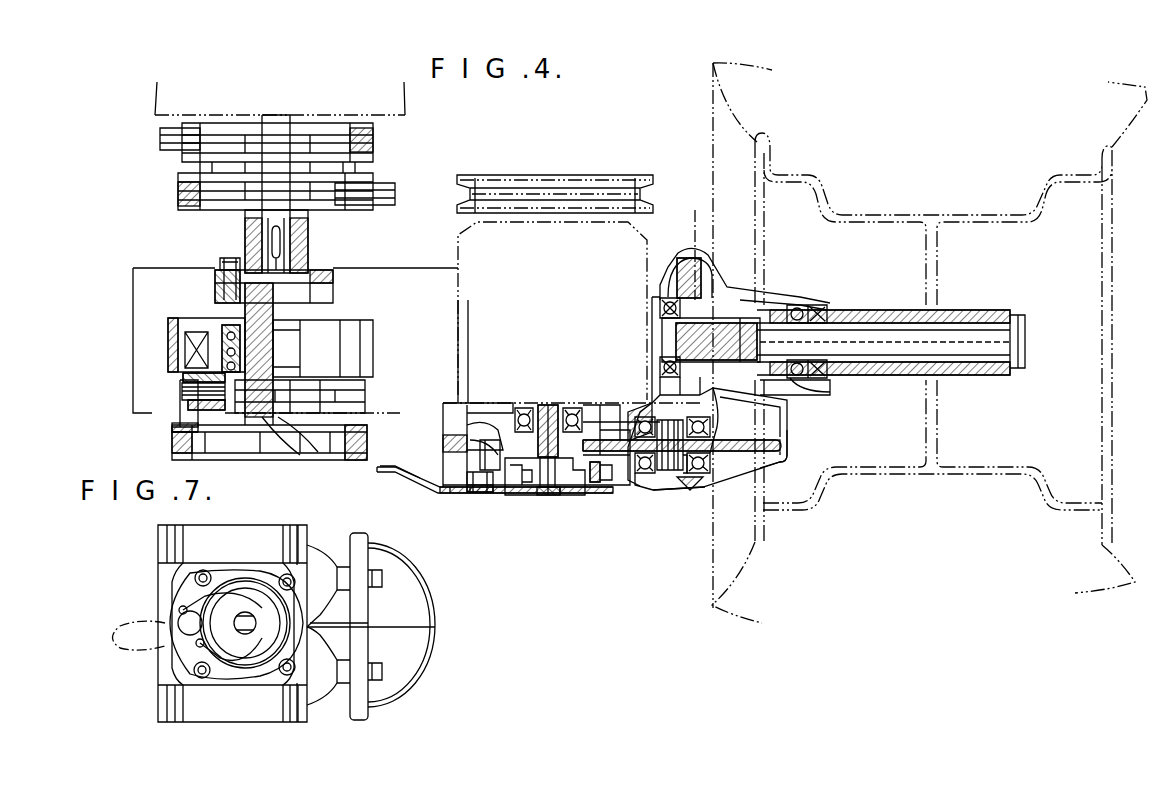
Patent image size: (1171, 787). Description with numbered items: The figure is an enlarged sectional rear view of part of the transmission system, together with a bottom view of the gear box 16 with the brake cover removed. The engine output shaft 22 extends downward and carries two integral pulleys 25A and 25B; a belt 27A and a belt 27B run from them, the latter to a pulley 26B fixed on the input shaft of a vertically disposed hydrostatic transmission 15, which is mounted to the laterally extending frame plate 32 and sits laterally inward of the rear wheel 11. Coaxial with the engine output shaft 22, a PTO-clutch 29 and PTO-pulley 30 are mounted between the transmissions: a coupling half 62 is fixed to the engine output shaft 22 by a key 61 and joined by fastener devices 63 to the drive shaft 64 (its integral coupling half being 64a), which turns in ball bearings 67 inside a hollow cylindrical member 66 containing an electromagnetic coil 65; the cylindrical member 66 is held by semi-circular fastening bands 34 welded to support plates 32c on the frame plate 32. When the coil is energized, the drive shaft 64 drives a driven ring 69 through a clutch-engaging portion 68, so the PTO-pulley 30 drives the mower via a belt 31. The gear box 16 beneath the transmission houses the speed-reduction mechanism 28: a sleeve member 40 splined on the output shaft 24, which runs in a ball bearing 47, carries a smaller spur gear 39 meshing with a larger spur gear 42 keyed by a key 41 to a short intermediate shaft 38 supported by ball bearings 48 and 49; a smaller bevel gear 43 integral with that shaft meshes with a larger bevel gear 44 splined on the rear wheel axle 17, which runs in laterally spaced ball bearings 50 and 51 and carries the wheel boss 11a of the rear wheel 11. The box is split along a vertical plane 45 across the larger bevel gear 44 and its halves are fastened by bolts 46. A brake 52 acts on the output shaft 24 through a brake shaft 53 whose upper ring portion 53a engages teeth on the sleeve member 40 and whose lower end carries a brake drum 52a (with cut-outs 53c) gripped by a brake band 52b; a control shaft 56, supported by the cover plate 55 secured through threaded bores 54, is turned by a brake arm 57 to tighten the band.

In FIG. 4, the rear wheel 11 is at (713, 92).
In FIG. 4, the wheel boss 11a is at (972, 378).
In FIG. 4, the hydrostatic transmission 15 is at (470, 326).
In FIG. 7, the gear box 16 is at (318, 700).
In FIG. 4, the rear wheel axle 17 is at (870, 322).
In FIG. 4, the engine output shaft 22 is at (300, 216).
In FIG. 4, the output shaft 24 is at (580, 405).
In FIG. 4, the pulley 25A is at (320, 140).
In FIG. 4, the pulley 25B is at (235, 198).
In FIG. 4, the pulley 26B is at (582, 190).
In FIG. 4, the belt 27A is at (378, 141).
In FIG. 4, the belt 27B is at (180, 192).
In FIG. 4, the speed-reduction mechanism 28 is at (798, 386).
In FIG. 4, the PTO-clutch 29 is at (375, 392).
In FIG. 4, the PTO-pulley 30 is at (254, 448).
In FIG. 4, the belt 31 is at (358, 448).
In FIG. 4, the frame plate 32 is at (420, 266).
In FIG. 4, the support plate 32c is at (375, 346).
In FIG. 4, the fastening band 34 is at (172, 365).
In FIG. 4, the intermediate shaft 38 is at (702, 488).
In FIG. 4, the smaller spur gear 39 is at (490, 412).
In FIG. 4, the sleeve member 40 is at (548, 405).
In FIG. 4, the key 41 is at (712, 485).
In FIG. 4, the larger spur gear 42 is at (792, 440).
In FIG. 4, the smaller bevel gear 43 is at (648, 400).
In FIG. 4, the larger bevel gear 44 is at (670, 266).
In FIG. 4, the vertical plane 45 is at (704, 238).
In FIG. 4, the bolt 46 is at (688, 476).
In FIG. 7, the bolt 46 is at (383, 578).
In FIG. 4, the ball bearing 47 is at (520, 408).
In FIG. 4, the ball bearing 48 is at (722, 420).
In FIG. 4, the ball bearing 49 is at (660, 478).
In FIG. 4, the ball bearing 50 is at (660, 306).
In FIG. 4, the ball bearing 51 is at (822, 302).
In FIG. 4, the brake 52 is at (506, 492).
In FIG. 7, the brake 52 is at (243, 700).
In FIG. 4, the brake drum 52a is at (430, 480).
In FIG. 7, the brake drum 52a is at (298, 580).
In FIG. 4, the brake band 52b is at (600, 485).
In FIG. 7, the brake band 52b is at (183, 605).
In FIG. 4, the brake shaft 53 is at (552, 495).
In FIG. 7, the brake shaft 53 is at (243, 636).
In FIG. 4, the upper ring portion 53a is at (486, 458).
In FIG. 7, the impeller chamber 53c is at (265, 600).
In FIG. 7, the threaded bore 54 is at (285, 575).
In FIG. 4, the cover plate 55 is at (516, 490).
In FIG. 4, the control shaft 56 is at (479, 493).
In FIG. 7, the control shaft 56 is at (178, 615).
In FIG. 4, the brake arm 57 is at (402, 477).
In FIG. 7, the brake arm 57 is at (160, 640).
In FIG. 4, the key 61 is at (282, 242).
In FIG. 4, the coupling half 62 is at (330, 276).
In FIG. 4, the fastener device 63 is at (224, 262).
In FIG. 4, the drive shaft 64 is at (265, 346).
In FIG. 4, the shaft flange 64a is at (217, 288).
In FIG. 4, the electromagnetic coil 65 is at (185, 352).
In FIG. 4, the hollow cylindrical member 66 is at (188, 336).
In FIG. 4, the ball bearing 67 is at (188, 377).
In FIG. 4, the clutch-engaging portion 68 is at (300, 450).
In FIG. 4, the driven ring 69 is at (180, 418).